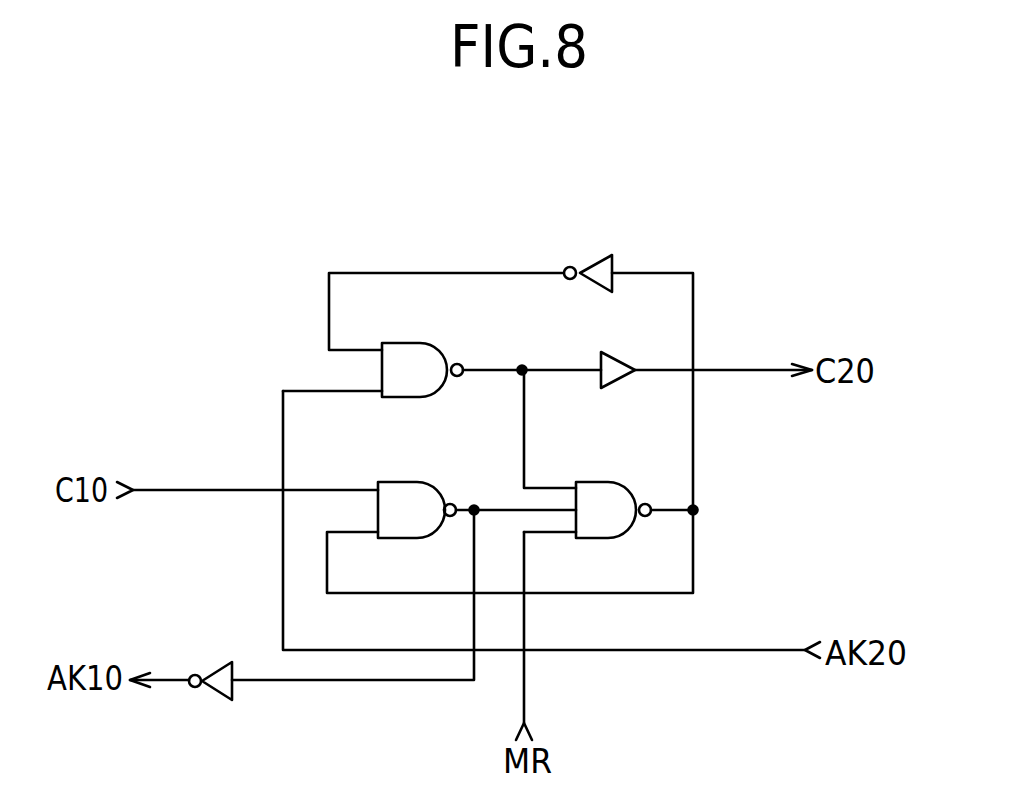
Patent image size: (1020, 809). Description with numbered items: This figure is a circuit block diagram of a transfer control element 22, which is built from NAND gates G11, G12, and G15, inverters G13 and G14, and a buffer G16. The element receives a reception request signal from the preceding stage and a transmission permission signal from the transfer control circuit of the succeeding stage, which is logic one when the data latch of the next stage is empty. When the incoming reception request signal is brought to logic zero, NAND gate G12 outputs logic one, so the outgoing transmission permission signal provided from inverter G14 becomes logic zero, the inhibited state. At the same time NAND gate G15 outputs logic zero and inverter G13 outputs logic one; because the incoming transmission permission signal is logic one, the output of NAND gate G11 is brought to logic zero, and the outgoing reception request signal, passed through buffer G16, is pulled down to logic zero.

The transfer control element 22 is at (740, 265).
The NAND gate G11 is at (417, 357).
The NAND gate G12 is at (410, 495).
The inverter G13 is at (592, 263).
The inverter G14 is at (220, 677).
The NAND gate G15 is at (603, 495).
The buffer G16 is at (616, 357).